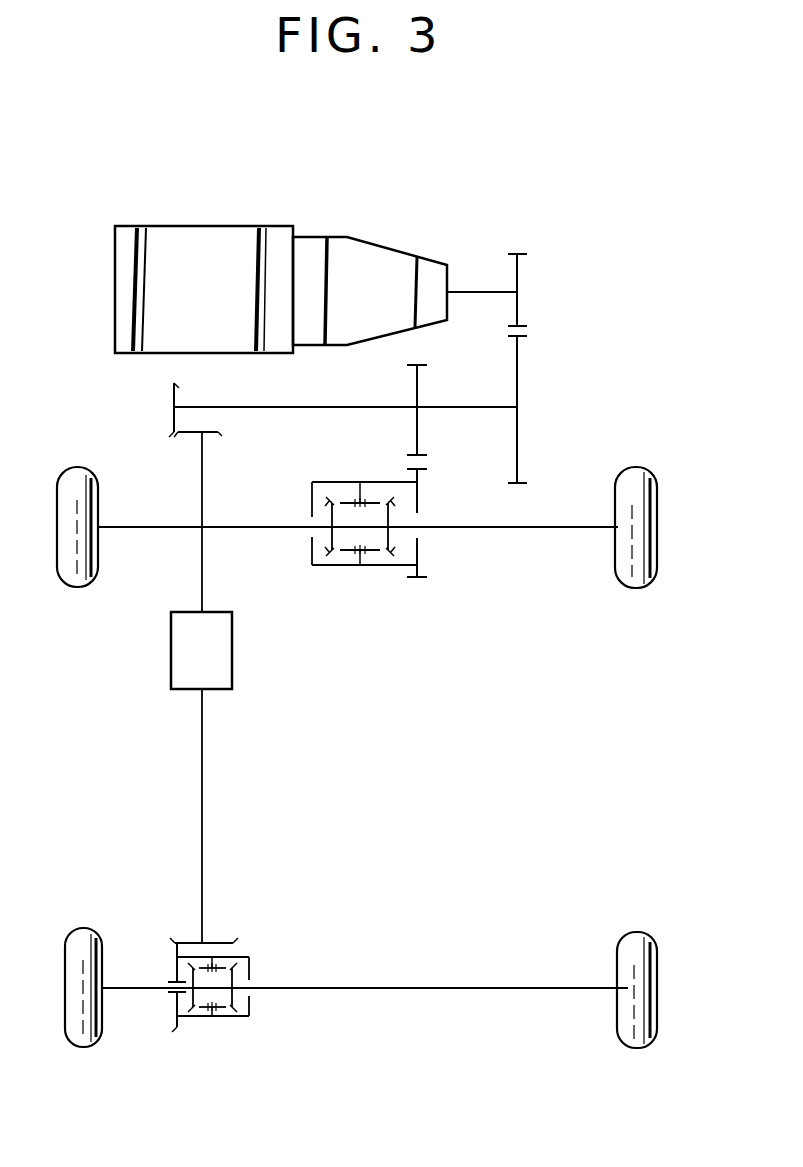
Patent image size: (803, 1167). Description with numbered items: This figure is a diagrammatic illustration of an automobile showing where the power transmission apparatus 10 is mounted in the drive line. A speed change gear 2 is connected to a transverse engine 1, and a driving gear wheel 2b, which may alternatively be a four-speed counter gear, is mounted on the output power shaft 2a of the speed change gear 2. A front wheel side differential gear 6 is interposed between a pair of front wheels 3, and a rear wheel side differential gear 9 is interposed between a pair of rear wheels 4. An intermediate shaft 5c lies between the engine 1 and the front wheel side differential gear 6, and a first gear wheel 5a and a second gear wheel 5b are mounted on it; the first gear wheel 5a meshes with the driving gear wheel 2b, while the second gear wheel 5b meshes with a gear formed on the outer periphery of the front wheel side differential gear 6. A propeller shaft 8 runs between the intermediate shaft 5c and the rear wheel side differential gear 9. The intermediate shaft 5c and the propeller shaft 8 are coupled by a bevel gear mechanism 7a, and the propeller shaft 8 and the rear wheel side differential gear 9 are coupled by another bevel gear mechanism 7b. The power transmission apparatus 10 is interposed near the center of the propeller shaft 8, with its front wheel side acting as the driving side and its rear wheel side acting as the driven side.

The transverse engine 1 is at (207, 240).
The speed change gear 2 is at (383, 262).
The output power shaft 2a is at (468, 290).
The driving gear wheel 2b is at (520, 282).
The first gear wheel 5a is at (520, 380).
The second gear wheel 5b is at (420, 380).
The intermediate shaft 5c is at (340, 406).
The bevel gear mechanism 7a is at (168, 408).
The front wheels 3 is at (77, 588).
The front wheel side differential gear 6 is at (355, 566).
The propeller shaft 8 is at (203, 777).
The power transmission apparatus 10 is at (233, 658).
The bevel gear mechanism 7b is at (160, 937).
The rear wheel side differential gear 9 is at (262, 958).
The rear wheels 4 is at (83, 1048).